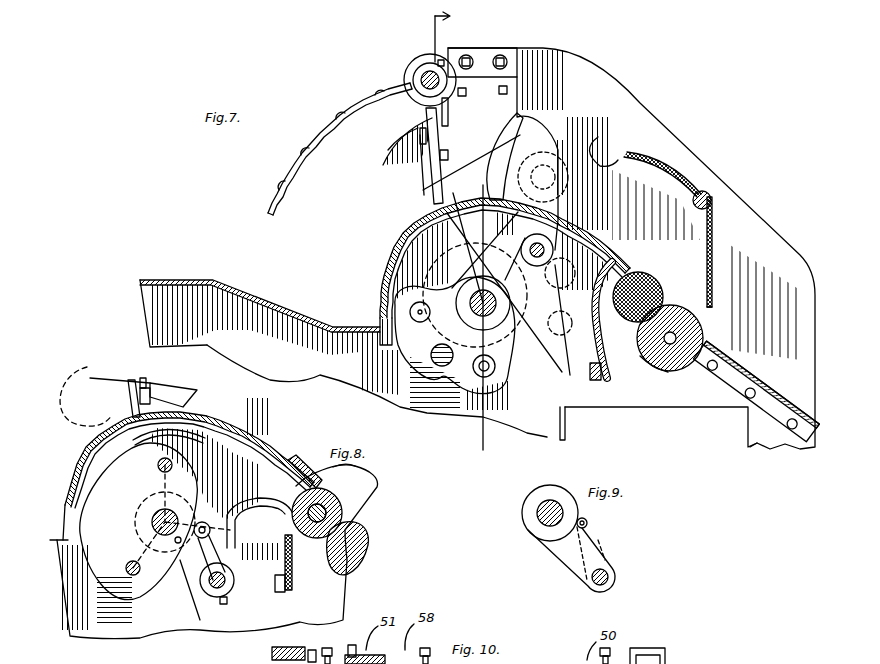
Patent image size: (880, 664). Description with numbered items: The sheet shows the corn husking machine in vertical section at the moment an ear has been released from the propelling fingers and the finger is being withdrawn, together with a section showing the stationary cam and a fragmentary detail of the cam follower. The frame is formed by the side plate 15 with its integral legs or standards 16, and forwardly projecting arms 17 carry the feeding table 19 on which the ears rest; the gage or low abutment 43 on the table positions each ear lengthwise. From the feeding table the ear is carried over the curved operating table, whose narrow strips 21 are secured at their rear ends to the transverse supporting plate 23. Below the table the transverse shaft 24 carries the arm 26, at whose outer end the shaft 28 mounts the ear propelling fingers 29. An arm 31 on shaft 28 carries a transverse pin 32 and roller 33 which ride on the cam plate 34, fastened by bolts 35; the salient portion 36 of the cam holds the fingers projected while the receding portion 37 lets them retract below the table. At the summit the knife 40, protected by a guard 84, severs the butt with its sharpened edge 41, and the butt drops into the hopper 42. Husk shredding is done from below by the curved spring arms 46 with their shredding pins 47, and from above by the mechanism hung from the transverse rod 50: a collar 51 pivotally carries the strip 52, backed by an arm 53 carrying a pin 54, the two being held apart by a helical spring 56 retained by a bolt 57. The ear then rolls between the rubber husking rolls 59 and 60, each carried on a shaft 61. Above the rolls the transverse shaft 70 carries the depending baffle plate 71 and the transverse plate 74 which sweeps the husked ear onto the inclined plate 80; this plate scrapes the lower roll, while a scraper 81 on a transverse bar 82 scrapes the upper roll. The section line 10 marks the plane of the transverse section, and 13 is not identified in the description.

In FIG. 7, the section line 10— 10 is at (454, 235).
In FIG. 7, the side plate 13 is at (160, 314).
In FIG. 7, the side plate 15 is at (633, 105).
In FIG. 8, the side plate 15 is at (380, 488).
In FIG. 7, the legs or standards 16 is at (768, 444).
In FIG. 7, the forwardly projecting arms 17 is at (377, 389).
In FIG. 7, the feeding table 19 is at (218, 280).
In FIG. 7, the narrow strips 21 is at (380, 265).
In FIG. 8, the narrow strips 21 is at (255, 432).
In FIG. 8, the transverse supporting plate 23 is at (346, 464).
In FIG. 7, the transverse shaft 24 is at (470, 312).
In FIG. 8, the transverse shaft 24 is at (164, 510).
In FIG. 9, the transverse shaft 24 is at (537, 516).
In FIG. 7, the arm 26 is at (568, 333).
In FIG. 8, the arm 26 is at (197, 605).
In FIG. 9, the arm 26 is at (565, 558).
In FIG. 7, the shaft 28 is at (553, 250).
In FIG. 8, the shaft 28 is at (228, 592).
In FIG. 7, the ear propelling fingers 29 is at (517, 138).
In FIG. 8, the ear propelling fingers 29 is at (259, 529).
In FIG. 8, the arm 31 is at (225, 568).
In FIG. 9, the arm 31 is at (600, 541).
In FIG. 8, the transverse pin 32 is at (209, 516).
In FIG. 9, the transverse pin 32 is at (588, 522).
In FIG. 7, the roller 33 is at (305, 150).
In FIG. 8, the roller 33 is at (168, 546).
In FIG. 9, the roller 33 is at (586, 520).
In FIG. 8, the cam plate 34 is at (175, 516).
In FIG. 8, the bolts 35 is at (172, 465).
In FIG. 8, the salient portion 36 is at (139, 521).
In FIG. 8, the receding portion 37 is at (232, 490).
In FIG. 7, the knife 40 is at (507, 105).
In FIG. 8, the knife 40 is at (180, 392).
In FIG. 7, the sharpened edge 41 is at (393, 163).
In FIG. 8, the sharpened edge 41 is at (96, 387).
In FIG. 7, the hopper 42 is at (713, 200).
In FIG. 7, the low abutment 43 is at (650, 152).
In FIG. 7, the curved spring arms 46 is at (382, 298).
In FIG. 8, the curved spring arms 46 is at (82, 462).
In FIG. 8, the shredding pin or finger 47 is at (140, 428).
In FIG. 7, the transverse rod 50 is at (425, 78).
In FIG. 7, the collar 51 is at (441, 62).
In FIG. 7, the strip 52 is at (433, 197).
In FIG. 8, the strip 52 is at (130, 382).
In FIG. 7, the arm 53 is at (447, 157).
In FIG. 8, the arm 53 is at (146, 388).
In FIG. 7, the pin 54 is at (443, 167).
In FIG. 8, the pin 54 is at (142, 380).
In FIG. 7, the helical spring 56 is at (458, 112).
In FIG. 7, the bolt 57 is at (427, 137).
In FIG. 7, the husking roll 59 is at (660, 294).
In FIG. 8, the husking roll 59 is at (308, 540).
In FIG. 7, the husking roll 60 is at (666, 360).
In FIG. 8, the husking roll 60 is at (350, 570).
In FIG. 7, the shaft 61 is at (645, 288).
In FIG. 7, the transverse shaft 70 is at (705, 192).
In FIG. 7, the baffle plate 71 is at (714, 245).
In FIG. 7, the transverse plate 74 is at (603, 143).
In FIG. 7, the inclined plate or chute 80 is at (770, 392).
In FIG. 7, the scraper 81 is at (598, 352).
In FIG. 7, the transverse bar 82 is at (607, 374).
In FIG. 7, the guard 84 is at (388, 146).